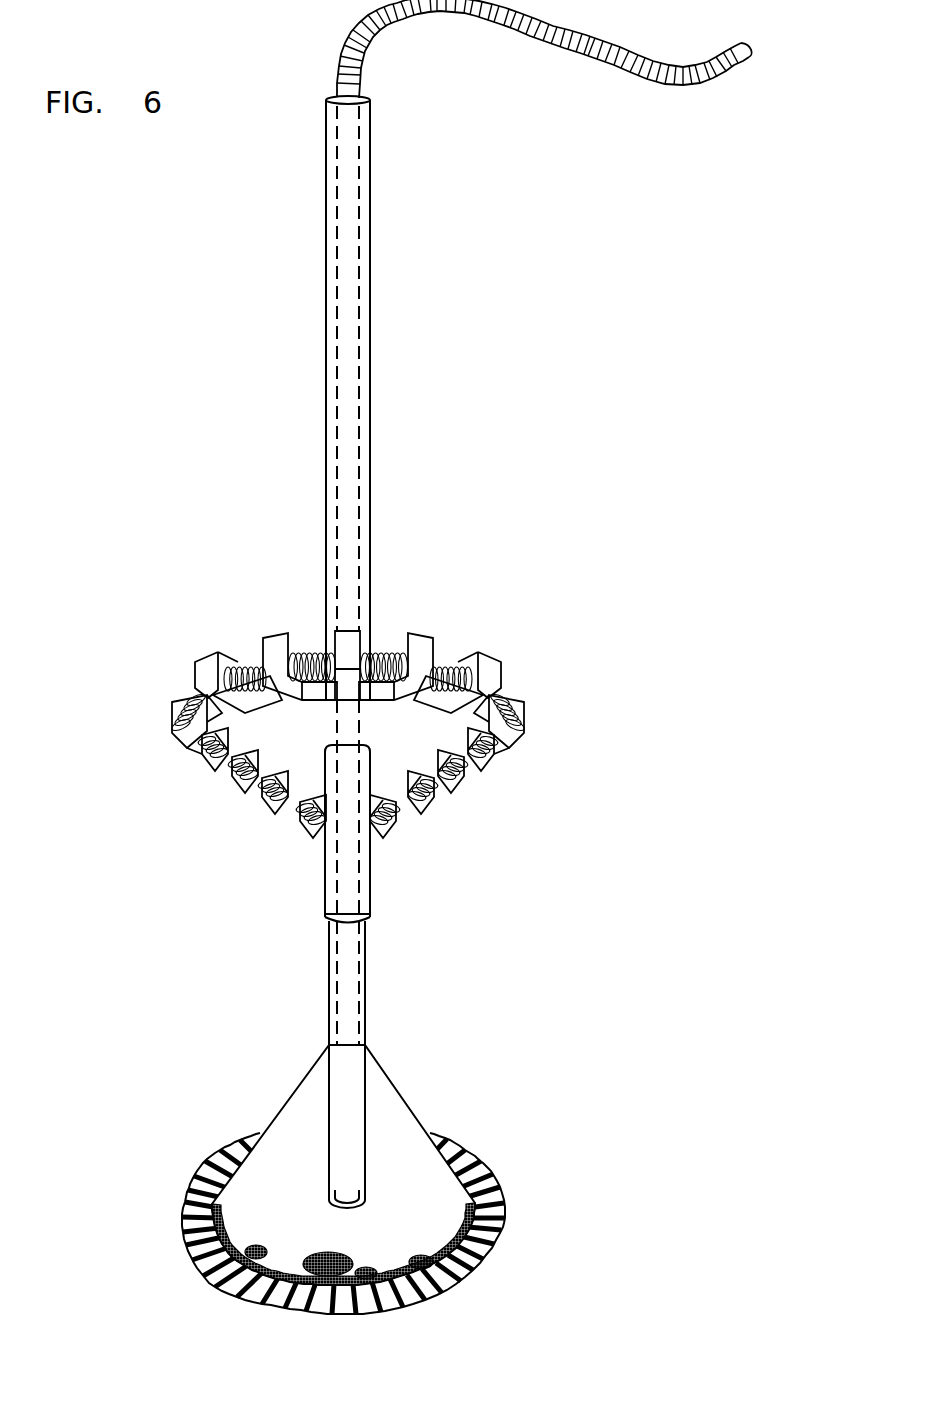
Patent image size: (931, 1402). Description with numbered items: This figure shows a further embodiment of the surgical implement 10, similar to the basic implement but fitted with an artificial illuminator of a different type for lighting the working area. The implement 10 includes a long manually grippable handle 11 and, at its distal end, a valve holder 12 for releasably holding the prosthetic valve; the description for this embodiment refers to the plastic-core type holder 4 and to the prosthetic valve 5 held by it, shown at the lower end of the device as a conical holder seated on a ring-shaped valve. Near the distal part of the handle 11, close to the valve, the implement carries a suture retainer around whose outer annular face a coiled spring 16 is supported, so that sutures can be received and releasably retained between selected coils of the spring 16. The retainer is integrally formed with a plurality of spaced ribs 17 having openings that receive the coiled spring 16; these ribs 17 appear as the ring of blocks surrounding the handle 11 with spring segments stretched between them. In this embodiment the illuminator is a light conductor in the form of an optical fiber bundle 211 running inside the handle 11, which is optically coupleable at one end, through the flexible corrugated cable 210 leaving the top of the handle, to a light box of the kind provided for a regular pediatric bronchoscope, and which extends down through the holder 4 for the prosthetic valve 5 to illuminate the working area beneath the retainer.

The surgical implement 10 is at (168, 592).
The handle 11 is at (371, 178).
The optical fiber bundle 211 is at (336, 327).
The power cable 210 is at (751, 50).
The valve holder 12 is at (309, 1075).
The prosthetic valve 4 is at (411, 1120).
The prosthetic valve 5 is at (496, 1217).
The coiled spring 16 is at (182, 698).
The spaced ribs 17 is at (488, 658).